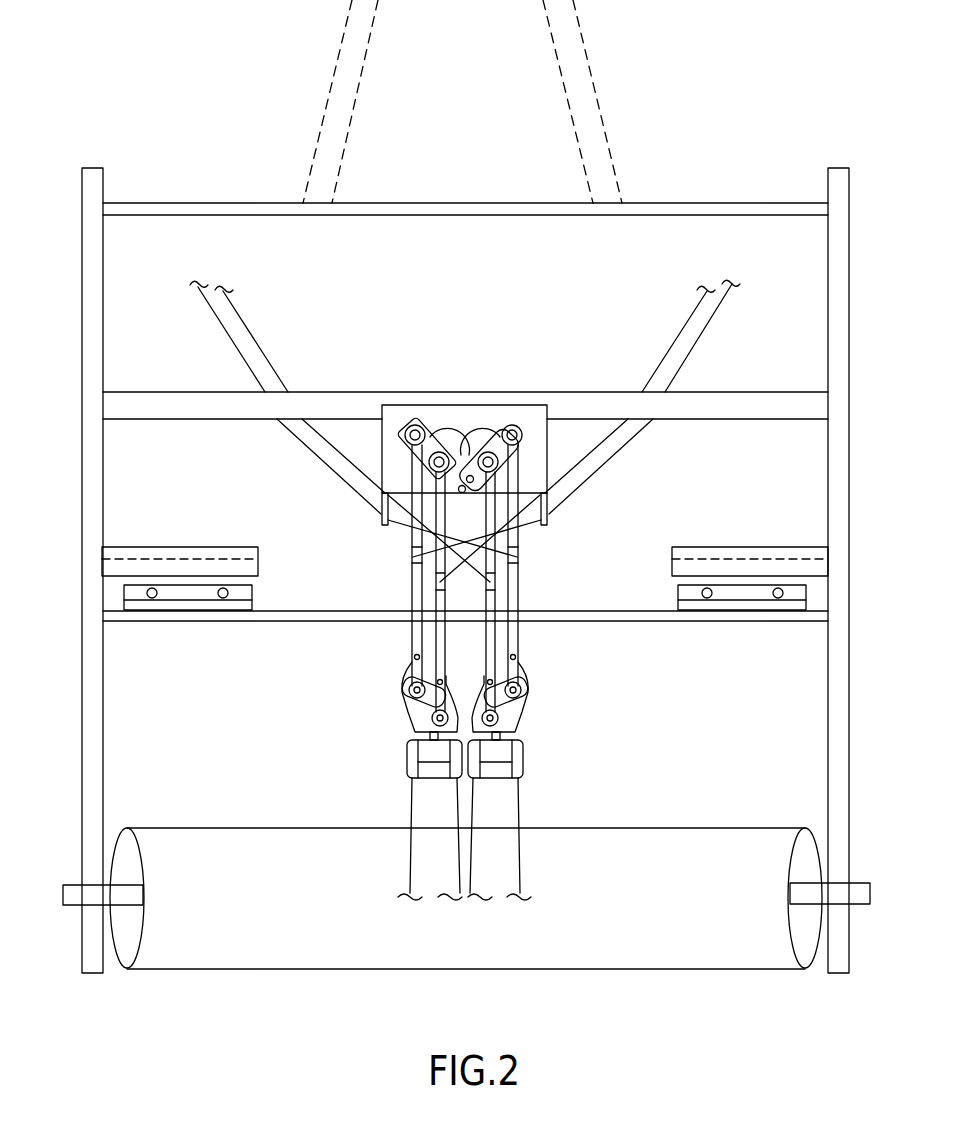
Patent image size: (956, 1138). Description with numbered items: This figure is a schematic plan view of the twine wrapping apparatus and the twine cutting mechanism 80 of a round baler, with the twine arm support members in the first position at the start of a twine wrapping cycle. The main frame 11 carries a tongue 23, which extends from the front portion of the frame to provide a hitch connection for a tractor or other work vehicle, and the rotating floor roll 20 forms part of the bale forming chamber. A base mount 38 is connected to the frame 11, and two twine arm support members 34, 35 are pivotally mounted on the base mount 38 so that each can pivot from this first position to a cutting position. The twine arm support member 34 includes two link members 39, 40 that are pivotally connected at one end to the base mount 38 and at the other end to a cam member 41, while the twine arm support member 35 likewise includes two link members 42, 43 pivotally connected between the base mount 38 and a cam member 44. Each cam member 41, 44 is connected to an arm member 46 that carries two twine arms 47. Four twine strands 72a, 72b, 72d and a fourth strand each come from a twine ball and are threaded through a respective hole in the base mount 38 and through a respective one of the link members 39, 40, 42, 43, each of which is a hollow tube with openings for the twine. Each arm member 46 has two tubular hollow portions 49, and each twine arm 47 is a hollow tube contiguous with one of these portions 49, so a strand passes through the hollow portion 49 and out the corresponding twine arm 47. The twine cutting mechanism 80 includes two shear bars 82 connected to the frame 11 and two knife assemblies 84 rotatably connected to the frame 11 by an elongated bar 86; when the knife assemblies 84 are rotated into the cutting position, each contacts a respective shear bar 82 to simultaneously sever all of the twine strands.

The main frame 11 is at (351, 415).
The floor roll 20 is at (730, 958).
The tongue 23 is at (352, 80).
The twine arm support member 34 is at (400, 559).
The twine arm support member 35 is at (530, 561).
The base mount 38 is at (461, 420).
The link member 39 is at (415, 650).
The link member 40 is at (438, 676).
The cam member 41 is at (410, 692).
The link member 42 is at (490, 702).
The link member 43 is at (513, 638).
The cam member 44 is at (527, 687).
The arm member 46 is at (413, 765).
The twine arm 47 is at (400, 790).
The tubular hollow portion 49 is at (413, 743).
The twine strand 72a is at (687, 313).
The twine strand 72b is at (707, 313).
The twine strand 72d is at (242, 313).
The twine cutting mechanism 80 is at (265, 636).
The shear bar 82 is at (148, 547).
The knife assembly 84 is at (262, 593).
The elongated bar 86 is at (760, 622).